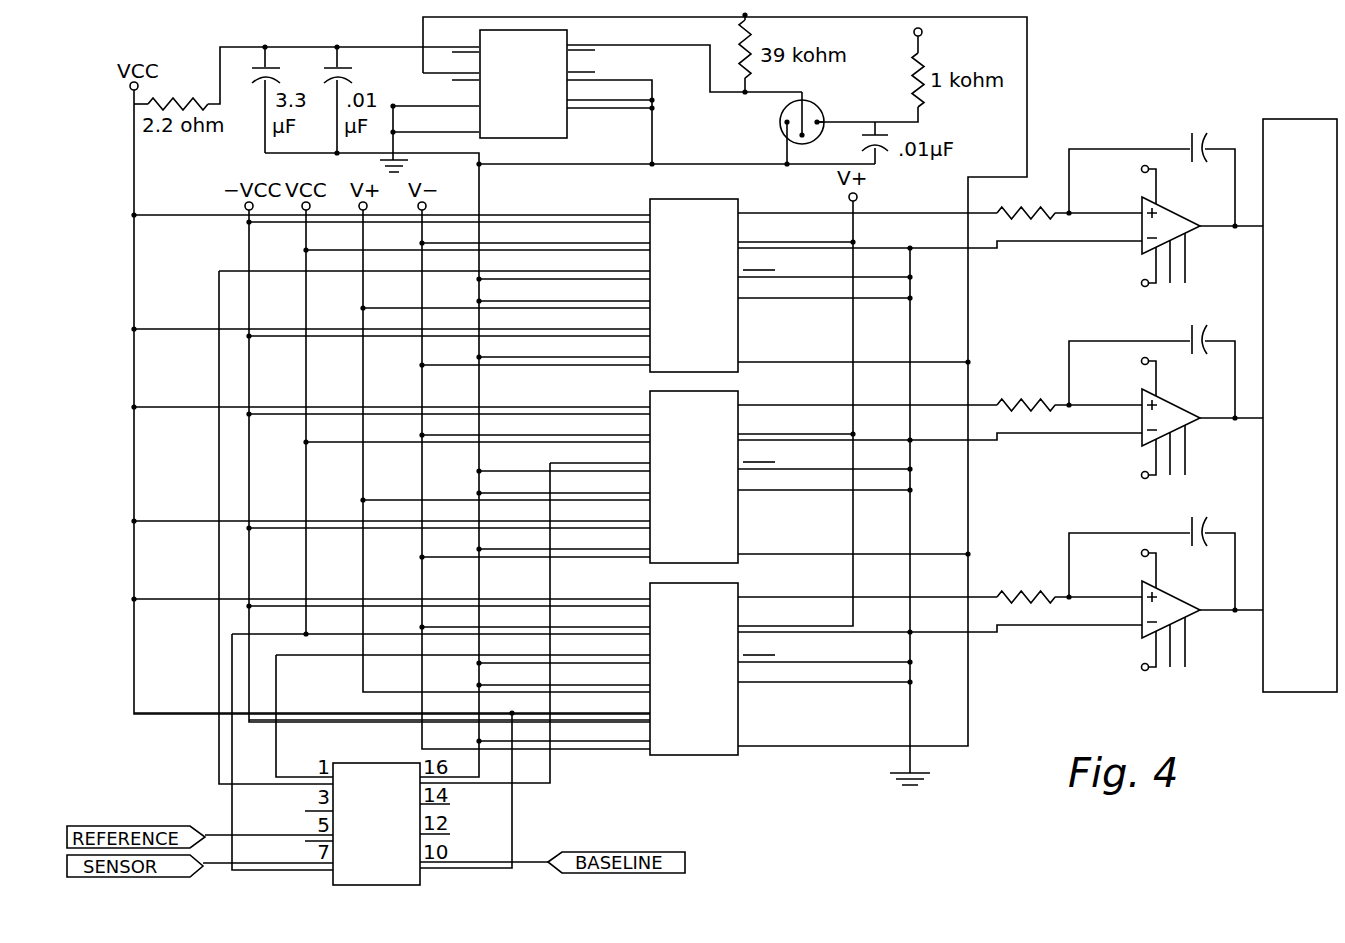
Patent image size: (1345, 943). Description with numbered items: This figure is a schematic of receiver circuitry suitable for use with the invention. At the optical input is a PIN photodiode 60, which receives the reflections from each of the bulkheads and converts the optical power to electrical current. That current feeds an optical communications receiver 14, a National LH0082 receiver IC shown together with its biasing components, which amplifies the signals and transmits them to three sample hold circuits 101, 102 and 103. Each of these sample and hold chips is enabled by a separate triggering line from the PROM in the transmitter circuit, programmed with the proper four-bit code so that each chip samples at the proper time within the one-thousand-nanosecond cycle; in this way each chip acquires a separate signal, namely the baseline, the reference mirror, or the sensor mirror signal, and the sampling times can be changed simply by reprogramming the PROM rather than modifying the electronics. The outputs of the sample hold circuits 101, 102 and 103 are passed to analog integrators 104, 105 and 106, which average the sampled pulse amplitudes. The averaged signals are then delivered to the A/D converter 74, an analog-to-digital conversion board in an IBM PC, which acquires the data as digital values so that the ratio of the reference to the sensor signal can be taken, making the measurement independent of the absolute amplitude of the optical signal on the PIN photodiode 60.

The optical communications receiver 14 is at (545, 91).
The PIN photodiode 60 is at (820, 105).
The A/D converter 74 is at (1297, 119).
The sample hold circuit 101 is at (675, 297).
The sample hold circuit 102 is at (675, 489).
The sample hold circuit 103 is at (675, 681).
The analog integrator 104 is at (1118, 149).
The analog integrator 105 is at (1118, 341).
The analog integrator 106 is at (1118, 533).